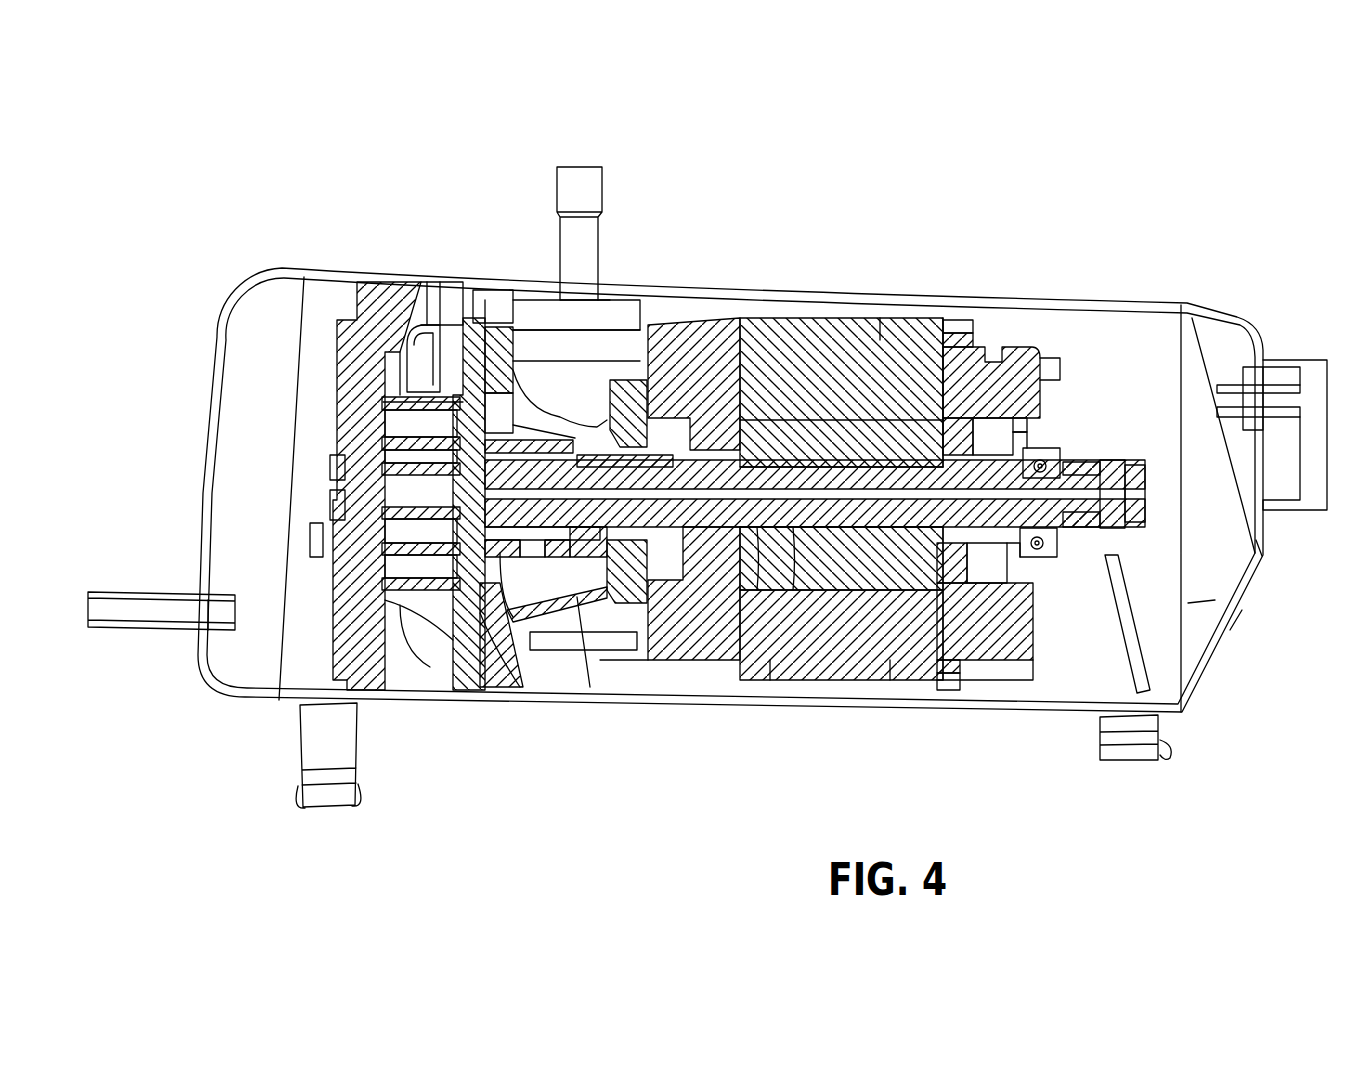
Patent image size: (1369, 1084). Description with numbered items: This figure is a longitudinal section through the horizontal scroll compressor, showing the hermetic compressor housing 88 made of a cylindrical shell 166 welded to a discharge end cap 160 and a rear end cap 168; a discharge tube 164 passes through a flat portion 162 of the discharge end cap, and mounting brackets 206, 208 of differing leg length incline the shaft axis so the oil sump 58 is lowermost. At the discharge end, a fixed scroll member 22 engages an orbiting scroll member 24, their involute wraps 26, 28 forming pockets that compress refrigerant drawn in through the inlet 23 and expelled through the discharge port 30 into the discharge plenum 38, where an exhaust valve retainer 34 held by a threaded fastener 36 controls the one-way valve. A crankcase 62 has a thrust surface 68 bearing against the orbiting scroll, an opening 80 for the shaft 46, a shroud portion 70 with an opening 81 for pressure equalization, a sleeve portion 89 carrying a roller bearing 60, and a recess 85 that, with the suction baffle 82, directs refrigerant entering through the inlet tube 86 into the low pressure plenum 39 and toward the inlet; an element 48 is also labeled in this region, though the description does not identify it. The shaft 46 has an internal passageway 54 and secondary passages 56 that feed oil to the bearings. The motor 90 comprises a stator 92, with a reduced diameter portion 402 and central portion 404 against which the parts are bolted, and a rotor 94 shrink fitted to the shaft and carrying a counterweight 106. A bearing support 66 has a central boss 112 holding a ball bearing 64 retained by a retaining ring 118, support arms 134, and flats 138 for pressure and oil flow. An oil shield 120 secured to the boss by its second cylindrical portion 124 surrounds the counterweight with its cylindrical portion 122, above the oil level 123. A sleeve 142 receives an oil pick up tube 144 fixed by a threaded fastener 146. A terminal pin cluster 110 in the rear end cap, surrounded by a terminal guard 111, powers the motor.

The fixed scroll member 22 is at (330, 273).
The inlet 23 is at (423, 285).
The orbiting scroll member 24 is at (497, 300).
The involute wrap 26 is at (385, 283).
The involute wrap 28 is at (437, 282).
The discharge port 30 is at (320, 487).
The exhaust valve retainer 34 is at (345, 492).
The threaded fastener 36 is at (310, 543).
The discharge plenum 38 is at (236, 346).
The low pressure plenum 39 is at (1090, 256).
The shaft 46 is at (748, 680).
The separator plate 48 is at (497, 660).
The internal passageway 54 is at (768, 680).
The secondary passages 56 is at (433, 660).
The oil sump 58 is at (1110, 715).
The roller bearings 60 is at (560, 420).
The crankcase 62 is at (528, 417).
The ball bearing 64 is at (1047, 460).
The bearing support 66 is at (975, 700).
The thrust surface 68 is at (397, 680).
The shroud portion 70 is at (500, 660).
The opening 80 is at (455, 690).
The opening 81 is at (608, 310).
The suction baffle 82 is at (527, 343).
The recess 85 is at (478, 300).
The inlet tube 86 is at (600, 195).
The compressor housing 88 is at (843, 300).
The sleeve portion 89 is at (645, 700).
The motor 90 is at (955, 303).
The stator 92 is at (750, 700).
The rotor 94 is at (790, 300).
The counterweight 106 is at (890, 680).
The terminal pin cluster 110 is at (1282, 355).
The terminal guard 111 is at (1313, 357).
The central boss 112 is at (1058, 305).
The retaining ring 118 is at (878, 300).
The oil shield 120 is at (990, 320).
The cylindrical portion 122 is at (1025, 320).
The oil level 123 is at (1150, 653).
The second cylindrical portion 124 is at (1095, 575).
The support arms 134 is at (1040, 430).
The flats 138 is at (977, 320).
The sleeve 142 is at (1085, 470).
The oil pick up tube 144 is at (1175, 607).
The threaded fastener 146 is at (1120, 480).
The discharge end cap 160 is at (203, 660).
The flat portion 162 is at (210, 480).
The discharge tube 164 is at (100, 600).
The cylindrical shell 166 is at (597, 700).
The rear end cap 168 is at (1226, 648).
The mounting bracket 206 is at (292, 750).
The mounting bracket 208 is at (1193, 738).
The reduced diameter portion 402 is at (1055, 305).
The central portion 404 is at (806, 318).